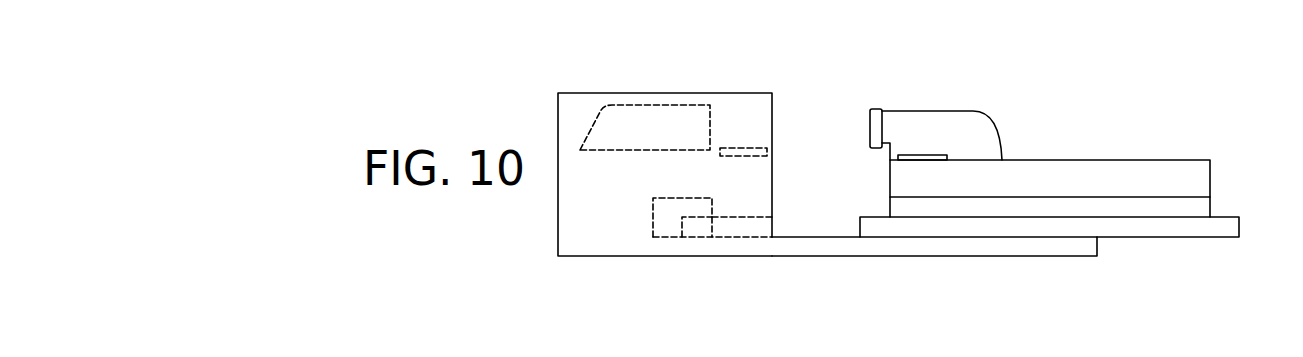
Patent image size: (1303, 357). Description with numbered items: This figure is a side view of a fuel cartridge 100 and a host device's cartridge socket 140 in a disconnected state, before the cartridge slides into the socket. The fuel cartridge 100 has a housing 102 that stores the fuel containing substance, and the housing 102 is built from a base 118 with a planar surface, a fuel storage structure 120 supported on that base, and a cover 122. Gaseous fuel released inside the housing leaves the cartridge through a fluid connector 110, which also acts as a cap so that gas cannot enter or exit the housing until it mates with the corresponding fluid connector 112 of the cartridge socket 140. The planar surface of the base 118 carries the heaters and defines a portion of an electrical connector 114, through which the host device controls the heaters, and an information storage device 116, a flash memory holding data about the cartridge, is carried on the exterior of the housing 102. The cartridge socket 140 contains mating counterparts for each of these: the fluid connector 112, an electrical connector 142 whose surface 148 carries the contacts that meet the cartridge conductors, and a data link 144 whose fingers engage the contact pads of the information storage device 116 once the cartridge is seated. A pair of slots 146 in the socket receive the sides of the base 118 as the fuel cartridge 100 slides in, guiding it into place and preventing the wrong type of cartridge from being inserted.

The fuel cartridge 100 is at (1024, 177).
The housing 102 is at (1083, 167).
The fluid connector 110 is at (977, 110).
The fluid connector 112 is at (682, 137).
The electrical connector 114 is at (872, 217).
The information storage device 116 is at (944, 156).
The base 118 is at (1207, 237).
The fuel storage structure 120 is at (1212, 213).
The cover 122 is at (1200, 160).
The cartridge socket 140 is at (675, 61).
The electrical connector 142 is at (652, 228).
The data link 144 is at (743, 150).
The slots 146 is at (748, 237).
The surface 148 is at (695, 218).